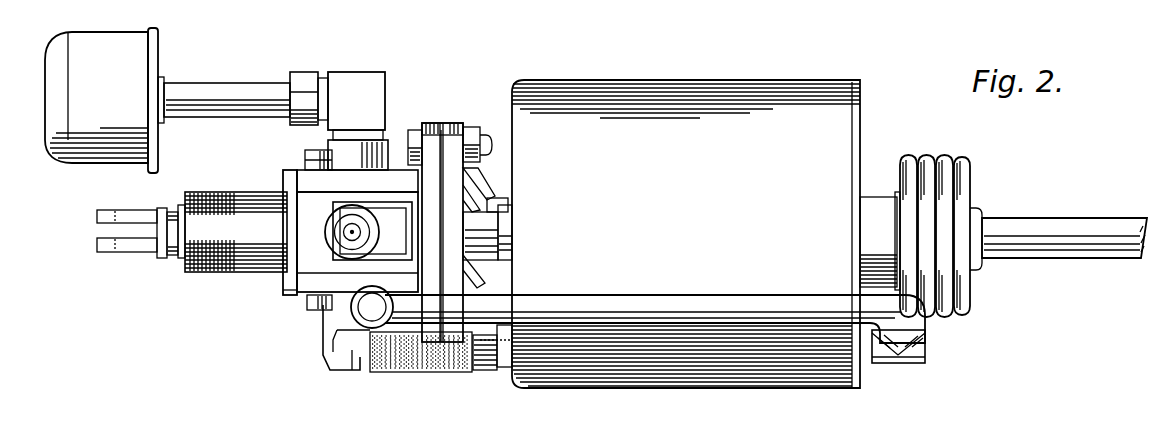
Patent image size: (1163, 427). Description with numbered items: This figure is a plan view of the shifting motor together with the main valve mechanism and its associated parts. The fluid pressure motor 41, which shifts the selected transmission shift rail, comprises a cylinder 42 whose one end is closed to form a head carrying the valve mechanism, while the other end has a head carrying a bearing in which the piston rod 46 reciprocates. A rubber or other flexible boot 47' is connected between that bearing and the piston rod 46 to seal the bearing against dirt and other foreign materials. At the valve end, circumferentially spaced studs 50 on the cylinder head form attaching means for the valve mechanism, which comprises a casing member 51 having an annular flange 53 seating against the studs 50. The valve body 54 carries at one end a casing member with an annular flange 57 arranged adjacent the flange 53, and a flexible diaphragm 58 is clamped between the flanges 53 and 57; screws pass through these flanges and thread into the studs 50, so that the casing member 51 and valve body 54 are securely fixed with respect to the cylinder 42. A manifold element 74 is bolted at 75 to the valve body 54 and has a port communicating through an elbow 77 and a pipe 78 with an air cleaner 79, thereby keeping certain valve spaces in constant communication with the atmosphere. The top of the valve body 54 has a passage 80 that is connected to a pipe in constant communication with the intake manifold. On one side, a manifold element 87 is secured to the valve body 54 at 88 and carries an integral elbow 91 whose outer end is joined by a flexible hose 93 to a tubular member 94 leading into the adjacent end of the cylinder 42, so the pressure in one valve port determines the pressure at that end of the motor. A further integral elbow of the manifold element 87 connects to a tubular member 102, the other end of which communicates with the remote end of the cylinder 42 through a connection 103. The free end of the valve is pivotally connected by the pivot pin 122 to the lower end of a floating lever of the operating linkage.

The fluid pressure motor 41 is at (685, 80).
The cylinder 42 is at (682, 268).
The piston rod 46 is at (1072, 219).
The flexible boot 47' is at (921, 221).
The studs 50 is at (496, 233).
The casing member 51 is at (475, 182).
The annular flange 53 is at (461, 124).
The valve body 54 is at (305, 265).
The annular flange 57 is at (440, 124).
The flexible diaphragm 58 is at (444, 143).
The manifold element 74 is at (310, 180).
The bolt 75 is at (312, 153).
The elbow 77 is at (378, 72).
The pipe 78 is at (265, 77).
The air cleaner 79 is at (157, 63).
The passage 80 is at (342, 222).
The manifold element 87 is at (297, 290).
The fastening 88 is at (310, 311).
The elbow 91 is at (323, 360).
The flexible hose 93 is at (405, 372).
The tubular member 94 is at (476, 370).
The tubular member 102 is at (642, 295).
The connection 103 is at (918, 330).
The pivot pin 122 is at (120, 252).